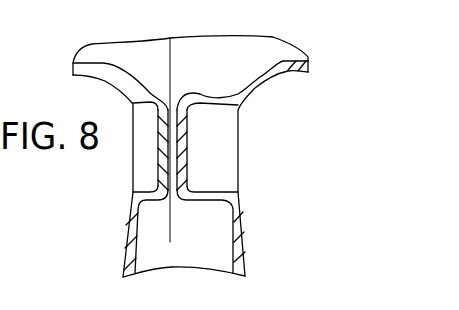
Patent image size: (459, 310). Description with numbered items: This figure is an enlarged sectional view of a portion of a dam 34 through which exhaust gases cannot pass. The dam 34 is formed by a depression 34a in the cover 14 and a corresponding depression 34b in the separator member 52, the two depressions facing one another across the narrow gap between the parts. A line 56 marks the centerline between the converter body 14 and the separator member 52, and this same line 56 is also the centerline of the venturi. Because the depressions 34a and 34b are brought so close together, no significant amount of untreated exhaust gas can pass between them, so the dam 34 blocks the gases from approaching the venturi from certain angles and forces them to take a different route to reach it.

The cover 14 is at (241, 232).
The dam 34 is at (184, 82).
The depression 34a is at (190, 162).
The depression 34b is at (162, 157).
The separator member 52 is at (130, 238).
The line 56 is at (170, 242).